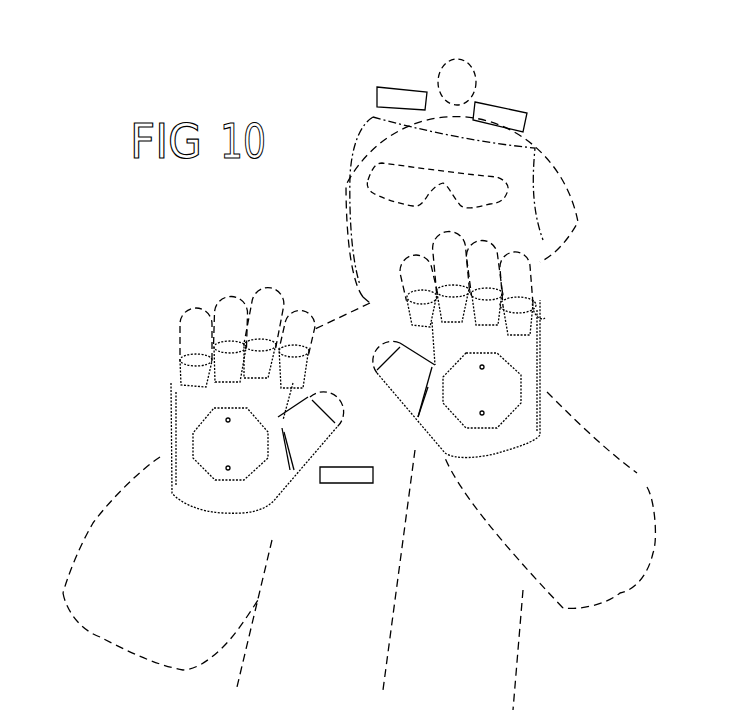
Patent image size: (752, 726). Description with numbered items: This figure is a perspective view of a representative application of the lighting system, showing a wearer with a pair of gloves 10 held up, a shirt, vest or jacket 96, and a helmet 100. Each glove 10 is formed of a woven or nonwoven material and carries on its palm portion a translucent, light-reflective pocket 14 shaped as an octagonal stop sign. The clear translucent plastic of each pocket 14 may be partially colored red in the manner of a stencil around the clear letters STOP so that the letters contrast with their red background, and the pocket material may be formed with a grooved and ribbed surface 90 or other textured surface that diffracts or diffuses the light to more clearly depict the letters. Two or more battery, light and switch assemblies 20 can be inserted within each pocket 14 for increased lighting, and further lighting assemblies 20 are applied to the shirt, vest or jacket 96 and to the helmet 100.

The helmet 100 is at (533, 63).
The battery, light and switch assembly 20 is at (393, 96).
The glove 10 is at (538, 372).
The pocket 14 is at (510, 400).
The grooved and ribbed surface 90 is at (490, 418).
The shirt, vest or jacket 96 is at (343, 584).